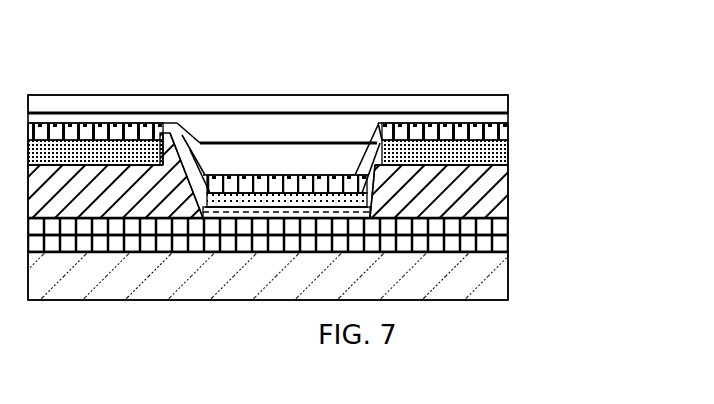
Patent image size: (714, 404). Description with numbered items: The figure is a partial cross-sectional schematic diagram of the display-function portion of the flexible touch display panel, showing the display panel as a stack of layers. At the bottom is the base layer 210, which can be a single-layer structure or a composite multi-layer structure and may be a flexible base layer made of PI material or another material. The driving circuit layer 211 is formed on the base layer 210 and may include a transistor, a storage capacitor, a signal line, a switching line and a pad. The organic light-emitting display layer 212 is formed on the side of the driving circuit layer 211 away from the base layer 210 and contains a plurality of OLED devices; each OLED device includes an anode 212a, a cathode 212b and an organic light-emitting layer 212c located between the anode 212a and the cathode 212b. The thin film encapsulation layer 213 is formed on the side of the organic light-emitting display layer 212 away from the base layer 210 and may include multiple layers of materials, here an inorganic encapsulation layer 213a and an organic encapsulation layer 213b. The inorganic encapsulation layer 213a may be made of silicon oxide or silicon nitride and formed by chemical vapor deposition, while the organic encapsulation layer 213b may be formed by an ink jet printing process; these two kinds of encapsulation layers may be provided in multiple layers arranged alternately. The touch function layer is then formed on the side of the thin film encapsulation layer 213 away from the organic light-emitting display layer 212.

The base layer 210 is at (508, 277).
The driving circuit layer 211 is at (508, 233).
The organic light-emitting display layer 212 is at (282, 110).
The anode 212a is at (322, 208).
The cathode 212b is at (223, 185).
The organic light-emitting layer 212c is at (278, 200).
The thin film encapsulation layer 213 is at (333, 155).
The inorganic encapsulation layer 213a is at (508, 128).
The organic encapsulation layer 213b is at (508, 103).